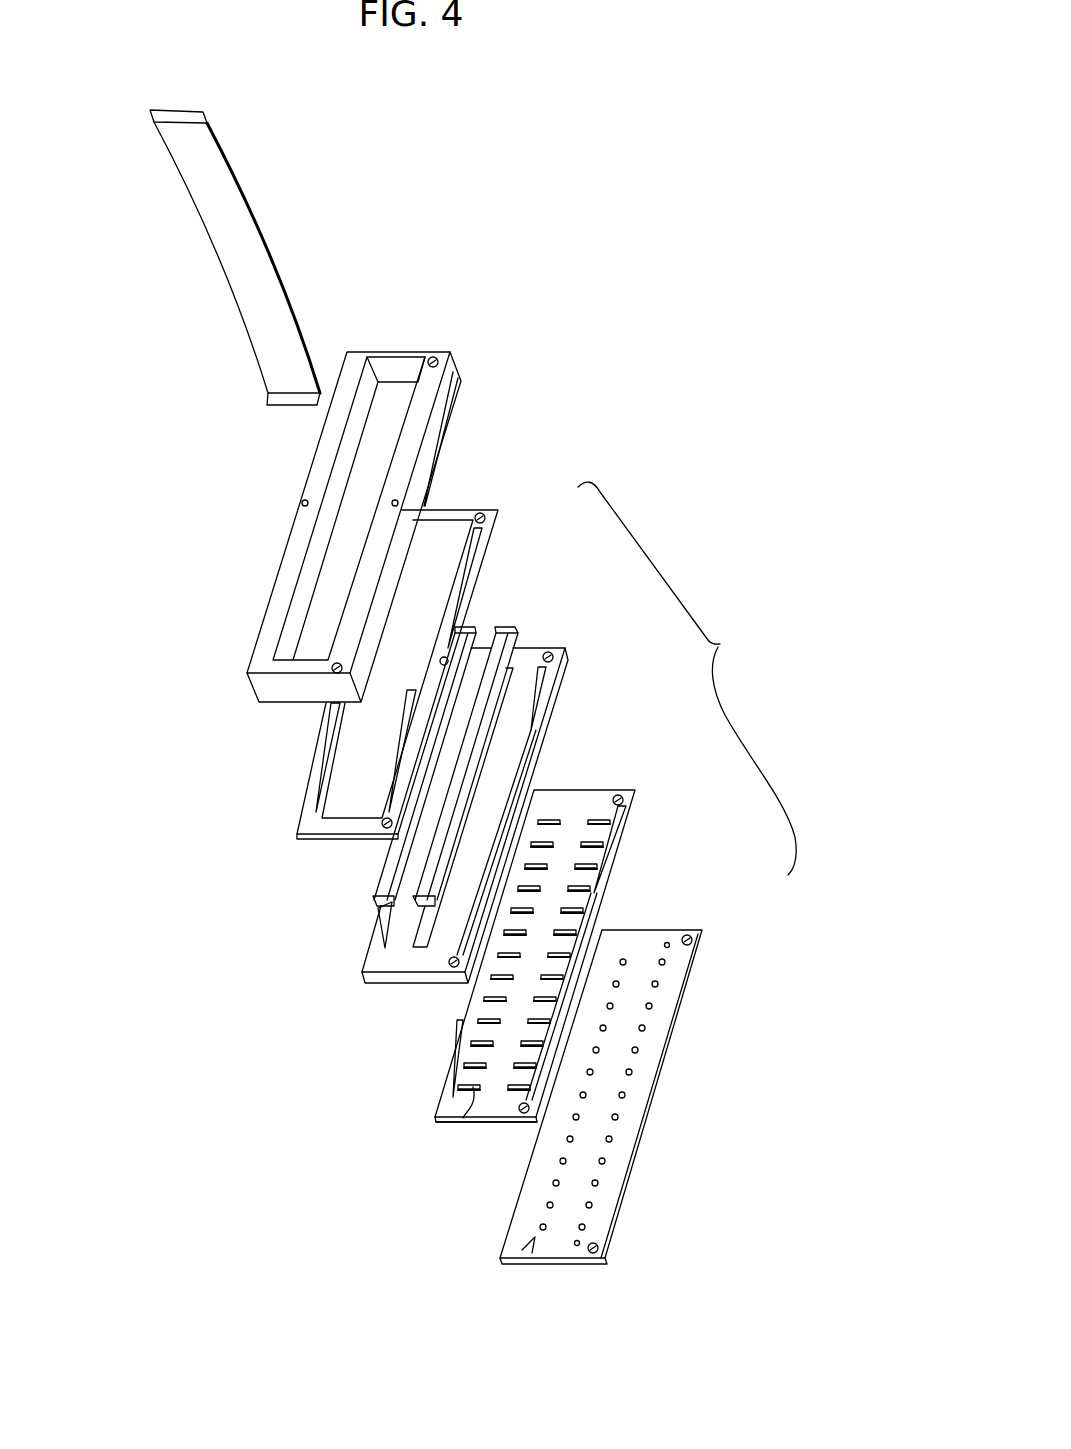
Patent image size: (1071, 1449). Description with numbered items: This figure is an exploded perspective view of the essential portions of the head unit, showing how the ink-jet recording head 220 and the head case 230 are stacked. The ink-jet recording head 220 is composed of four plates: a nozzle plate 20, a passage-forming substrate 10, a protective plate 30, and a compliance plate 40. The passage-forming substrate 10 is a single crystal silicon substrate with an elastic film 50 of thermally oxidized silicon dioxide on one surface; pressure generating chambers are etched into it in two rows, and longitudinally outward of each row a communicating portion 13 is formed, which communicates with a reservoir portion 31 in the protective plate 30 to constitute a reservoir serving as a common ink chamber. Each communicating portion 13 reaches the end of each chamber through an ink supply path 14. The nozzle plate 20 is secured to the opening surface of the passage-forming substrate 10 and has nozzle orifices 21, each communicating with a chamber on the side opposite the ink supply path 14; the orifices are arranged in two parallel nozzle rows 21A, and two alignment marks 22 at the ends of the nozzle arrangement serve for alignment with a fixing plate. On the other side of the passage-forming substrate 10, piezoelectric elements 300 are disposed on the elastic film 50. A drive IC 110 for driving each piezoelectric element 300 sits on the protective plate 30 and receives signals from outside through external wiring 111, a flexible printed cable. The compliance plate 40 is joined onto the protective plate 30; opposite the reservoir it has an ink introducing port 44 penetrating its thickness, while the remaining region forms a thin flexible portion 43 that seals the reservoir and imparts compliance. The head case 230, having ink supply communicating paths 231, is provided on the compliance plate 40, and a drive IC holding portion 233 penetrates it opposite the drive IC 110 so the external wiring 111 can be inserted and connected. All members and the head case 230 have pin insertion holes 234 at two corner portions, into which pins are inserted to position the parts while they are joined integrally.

The external wiring 111 is at (247, 273).
The head case 230 is at (461, 374).
The drive IC holding portion 233 is at (343, 467).
The ink supply communicating path 231 is at (398, 500).
The pin insertion hole 234 is at (433, 357).
The compliance plate 40 is at (500, 511).
The ink introducing port 44 is at (470, 627).
The flexible portion 43 is at (410, 755).
The drive IC 110 is at (503, 627).
The protective plate 30 is at (570, 653).
The reservoir portion 31 is at (520, 740).
The passage-forming substrate 10 is at (568, 790).
The communicating portion 13 is at (610, 858).
The ink supply path 14 is at (643, 929).
The nozzle plate 20 is at (672, 930).
The nozzle orifice 21 is at (643, 1028).
The nozzle row 21A is at (525, 1255).
The alignment mark 22 is at (667, 942).
The piezoelectric element 300 is at (455, 1120).
The elastic film 50 is at (500, 1107).
The ink-jet recording head 220 is at (687, 678).